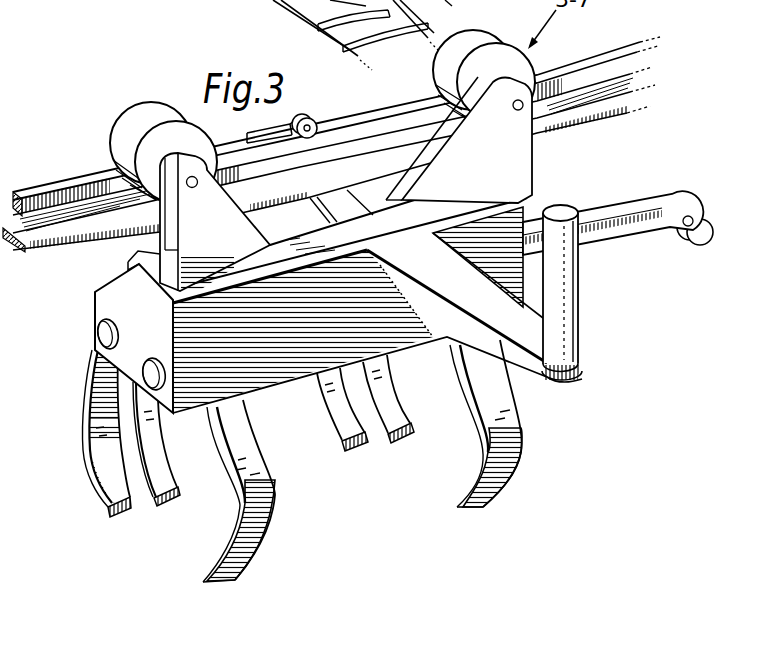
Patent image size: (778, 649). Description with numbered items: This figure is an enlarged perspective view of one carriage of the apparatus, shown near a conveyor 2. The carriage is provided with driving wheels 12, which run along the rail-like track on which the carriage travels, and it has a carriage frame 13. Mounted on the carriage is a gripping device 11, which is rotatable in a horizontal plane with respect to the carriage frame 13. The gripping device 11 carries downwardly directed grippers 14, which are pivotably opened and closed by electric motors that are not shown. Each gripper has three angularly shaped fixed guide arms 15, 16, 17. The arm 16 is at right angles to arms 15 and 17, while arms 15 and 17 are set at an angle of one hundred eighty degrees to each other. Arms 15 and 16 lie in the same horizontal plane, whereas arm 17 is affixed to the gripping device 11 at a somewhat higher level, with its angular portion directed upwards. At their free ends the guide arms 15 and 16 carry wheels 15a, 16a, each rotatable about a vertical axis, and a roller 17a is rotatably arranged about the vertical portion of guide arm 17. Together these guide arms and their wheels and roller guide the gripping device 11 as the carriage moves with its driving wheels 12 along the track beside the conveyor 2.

The conveyor 2 is at (263, 1).
The gripping device 11 is at (117, 300).
The driving wheels 12 is at (112, 150).
The carriage frame 13 is at (138, 253).
The grippers 14 is at (113, 487).
The guide arm 15 is at (252, 137).
The wheel 15a is at (320, 133).
The guide arm 16 is at (672, 203).
The wheel 16a is at (685, 243).
The guide arm 17 is at (582, 369).
The roller 17a is at (578, 317).